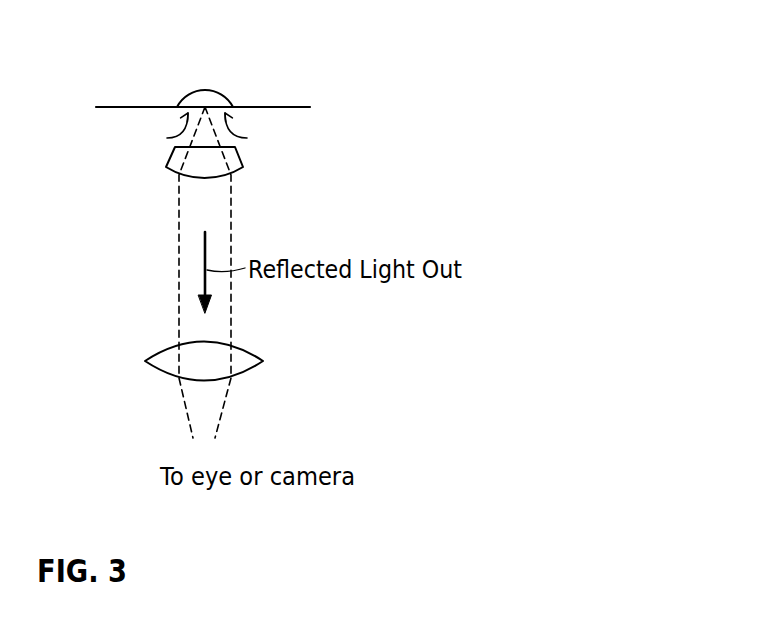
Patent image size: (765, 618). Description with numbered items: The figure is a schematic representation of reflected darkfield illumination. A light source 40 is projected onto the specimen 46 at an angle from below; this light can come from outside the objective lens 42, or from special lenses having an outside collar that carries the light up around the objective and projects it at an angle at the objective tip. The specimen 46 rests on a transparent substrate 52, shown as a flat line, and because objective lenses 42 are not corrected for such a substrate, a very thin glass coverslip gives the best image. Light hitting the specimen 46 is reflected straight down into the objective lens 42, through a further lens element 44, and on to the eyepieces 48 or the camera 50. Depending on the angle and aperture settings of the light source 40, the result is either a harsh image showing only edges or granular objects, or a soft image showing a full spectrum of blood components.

The light source 40 is at (223, 131).
The objective lens 42 is at (237, 170).
The second lens 44 is at (263, 362).
The specimen 46 is at (205, 88).
The eyepieces 48 is at (227, 492).
The camera 50 is at (306, 492).
The transparent substrate 52 is at (294, 105).